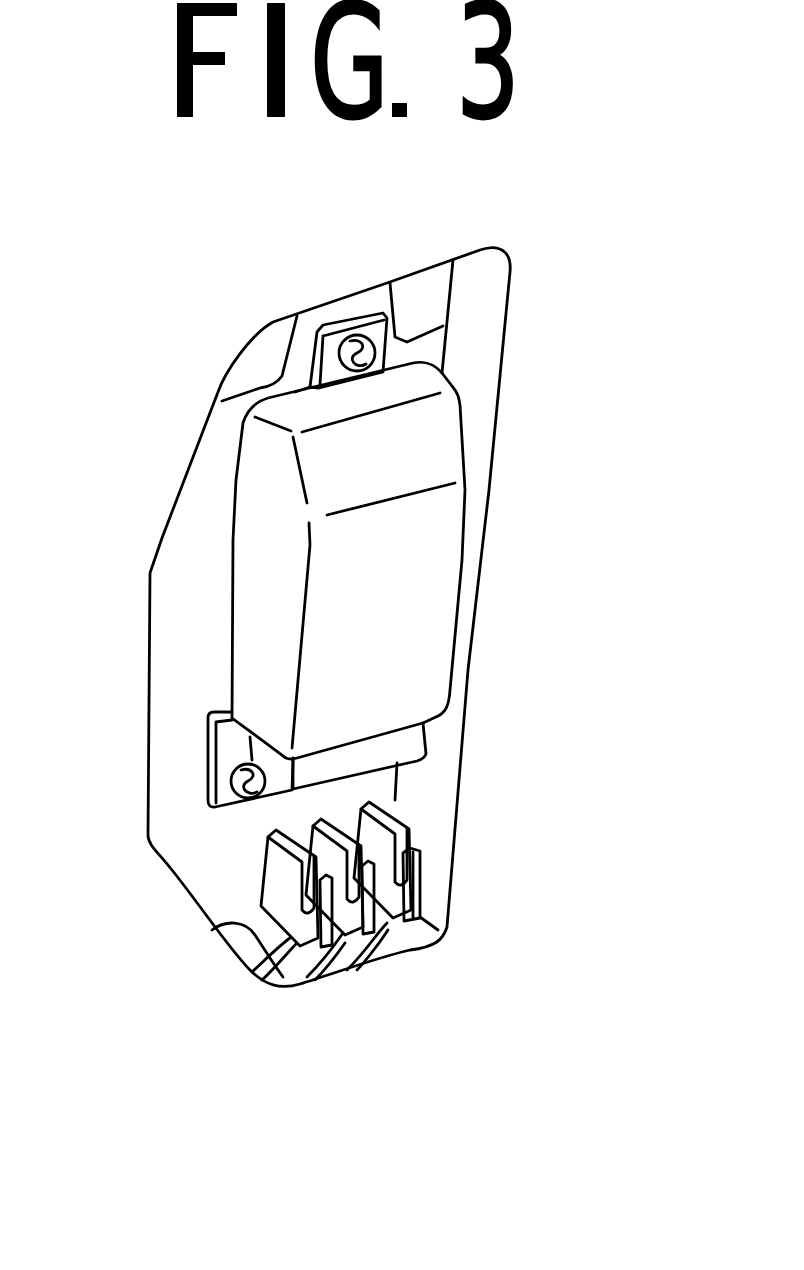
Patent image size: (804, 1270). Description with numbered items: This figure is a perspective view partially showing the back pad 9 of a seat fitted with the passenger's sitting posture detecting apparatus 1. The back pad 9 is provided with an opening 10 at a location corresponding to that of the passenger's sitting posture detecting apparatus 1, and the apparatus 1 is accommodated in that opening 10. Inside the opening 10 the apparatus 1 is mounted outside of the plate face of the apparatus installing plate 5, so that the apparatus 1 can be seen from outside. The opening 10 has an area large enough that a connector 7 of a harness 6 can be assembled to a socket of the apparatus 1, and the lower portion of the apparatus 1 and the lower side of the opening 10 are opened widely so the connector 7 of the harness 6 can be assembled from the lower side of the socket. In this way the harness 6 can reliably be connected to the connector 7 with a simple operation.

The passenger's sitting posture detecting apparatus 1 is at (408, 585).
The apparatus installing plate 5 is at (185, 607).
The harness 6 is at (212, 928).
The connector 7 is at (398, 817).
The back pad 9 is at (176, 443).
The opening 10 is at (487, 331).